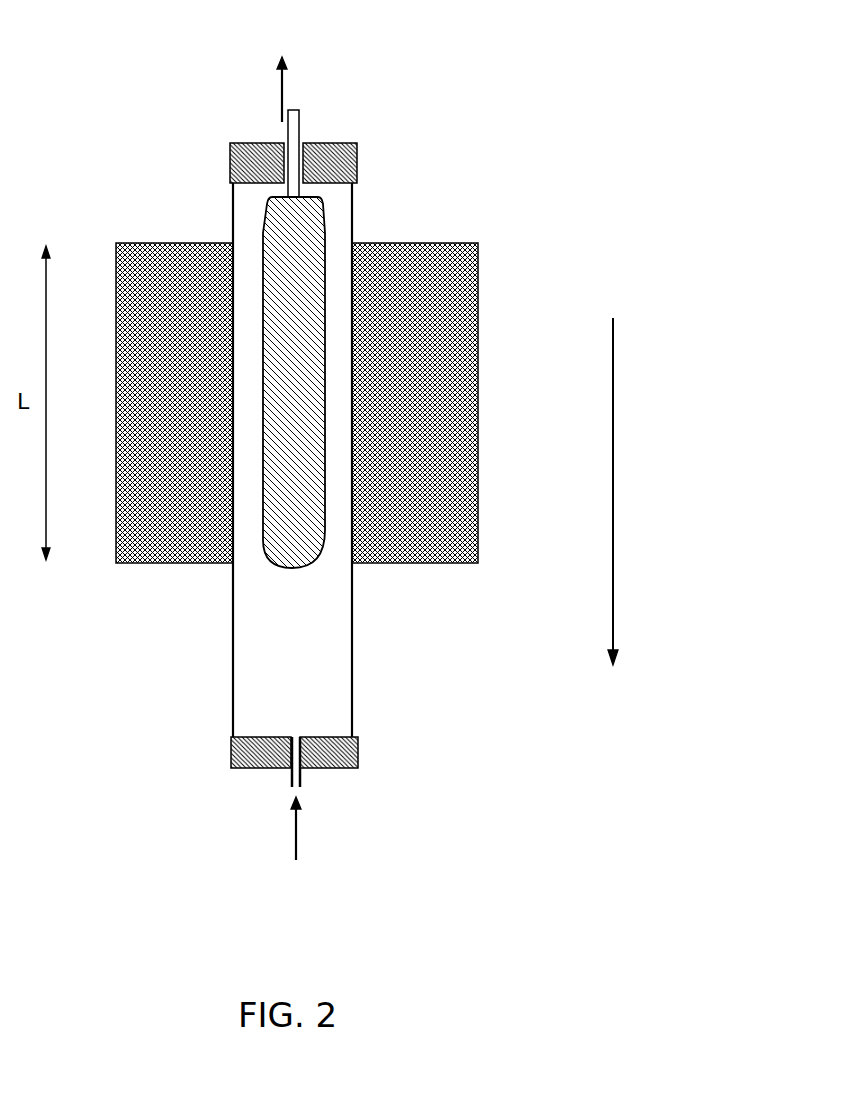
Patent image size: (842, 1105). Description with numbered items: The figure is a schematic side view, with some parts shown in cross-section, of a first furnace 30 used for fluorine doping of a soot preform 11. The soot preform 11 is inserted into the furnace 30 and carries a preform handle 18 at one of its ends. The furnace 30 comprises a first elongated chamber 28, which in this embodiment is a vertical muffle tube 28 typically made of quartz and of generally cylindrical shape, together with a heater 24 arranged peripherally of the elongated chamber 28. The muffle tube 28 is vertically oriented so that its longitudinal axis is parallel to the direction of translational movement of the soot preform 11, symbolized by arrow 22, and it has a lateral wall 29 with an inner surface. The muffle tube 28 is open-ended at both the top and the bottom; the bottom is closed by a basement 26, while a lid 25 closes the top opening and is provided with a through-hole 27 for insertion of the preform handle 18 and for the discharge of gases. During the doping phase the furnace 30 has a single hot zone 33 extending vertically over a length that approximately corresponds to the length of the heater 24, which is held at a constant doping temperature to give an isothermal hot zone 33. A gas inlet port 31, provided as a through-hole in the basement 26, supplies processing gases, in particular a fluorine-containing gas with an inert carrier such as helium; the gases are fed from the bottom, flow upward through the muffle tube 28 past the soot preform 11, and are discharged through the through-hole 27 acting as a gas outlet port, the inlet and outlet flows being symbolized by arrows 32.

The soot preform 11 is at (263, 232).
The preform handle 18 is at (300, 112).
The arrow indicating translational movement direction 22 is at (617, 368).
The heater 24 is at (478, 298).
The lid 25 is at (357, 160).
The basement 26 is at (231, 745).
The through-hole 27 is at (302, 143).
The first elongated chamber 28 is at (362, 649).
The lateral wall 29 is at (353, 205).
The first furnace 30 is at (515, 152).
The gas inlet port 31 is at (289, 777).
The gas flow arrows 32 is at (279, 97).
The hot zone 33 is at (250, 545).